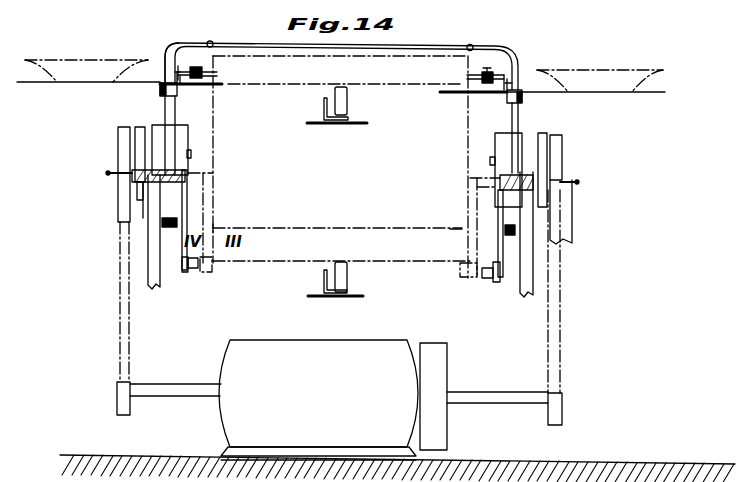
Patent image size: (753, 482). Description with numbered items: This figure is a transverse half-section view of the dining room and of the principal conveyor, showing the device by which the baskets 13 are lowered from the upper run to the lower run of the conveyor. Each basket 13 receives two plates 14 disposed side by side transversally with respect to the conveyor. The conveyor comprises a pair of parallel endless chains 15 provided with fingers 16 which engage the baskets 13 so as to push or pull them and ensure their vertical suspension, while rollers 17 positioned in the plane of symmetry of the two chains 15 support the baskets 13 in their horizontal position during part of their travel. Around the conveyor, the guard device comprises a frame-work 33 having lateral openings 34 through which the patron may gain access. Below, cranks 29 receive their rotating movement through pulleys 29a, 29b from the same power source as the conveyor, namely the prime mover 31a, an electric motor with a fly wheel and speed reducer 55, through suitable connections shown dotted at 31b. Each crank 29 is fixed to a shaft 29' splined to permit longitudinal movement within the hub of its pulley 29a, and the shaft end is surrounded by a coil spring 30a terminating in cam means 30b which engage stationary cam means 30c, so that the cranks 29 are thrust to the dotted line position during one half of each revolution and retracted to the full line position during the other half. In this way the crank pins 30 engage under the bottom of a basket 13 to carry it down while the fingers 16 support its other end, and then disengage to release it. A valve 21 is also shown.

The basket 13 is at (344, 167).
The plate 14 is at (66, 63).
The endless chain 15 is at (160, 95).
The finger 16 is at (181, 79).
The roller 17 is at (347, 100).
The valve 21 is at (212, 72).
The crank 29 is at (342, 223).
The splined shaft 29' is at (332, 168).
The pulley 29a is at (143, 152).
The pulley 29b is at (543, 135).
The crank pin 30 is at (210, 270).
The coil spring 30a is at (142, 218).
The cam means 30b is at (108, 173).
The stationary cam means 30c is at (125, 188).
The prime mover 31a is at (349, 348).
The connections 31b is at (128, 331).
The frame-work 33 is at (173, 44).
The lateral opening 34 is at (166, 70).
The fly wheel and speed reducer 55 is at (438, 368).